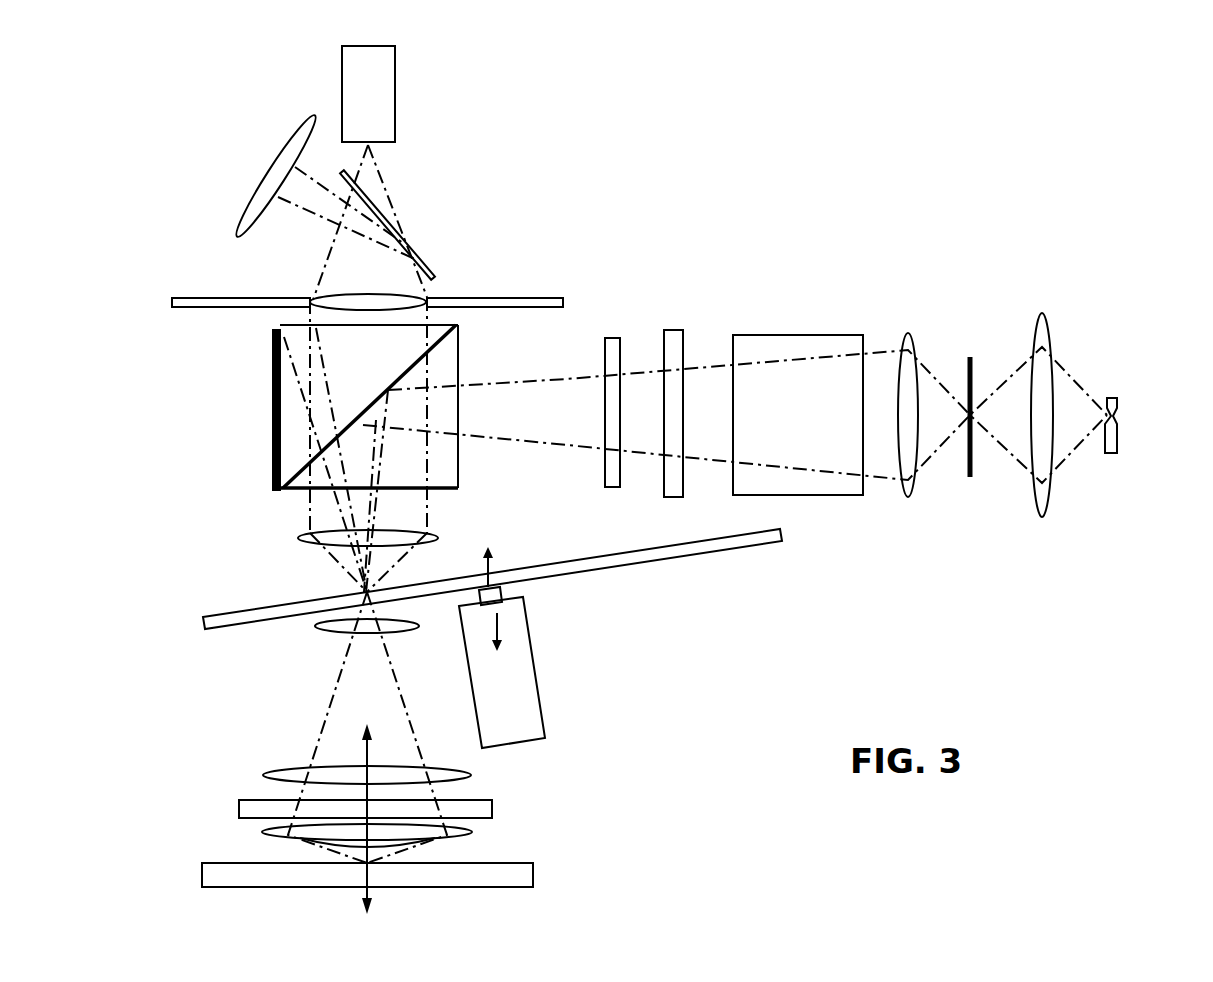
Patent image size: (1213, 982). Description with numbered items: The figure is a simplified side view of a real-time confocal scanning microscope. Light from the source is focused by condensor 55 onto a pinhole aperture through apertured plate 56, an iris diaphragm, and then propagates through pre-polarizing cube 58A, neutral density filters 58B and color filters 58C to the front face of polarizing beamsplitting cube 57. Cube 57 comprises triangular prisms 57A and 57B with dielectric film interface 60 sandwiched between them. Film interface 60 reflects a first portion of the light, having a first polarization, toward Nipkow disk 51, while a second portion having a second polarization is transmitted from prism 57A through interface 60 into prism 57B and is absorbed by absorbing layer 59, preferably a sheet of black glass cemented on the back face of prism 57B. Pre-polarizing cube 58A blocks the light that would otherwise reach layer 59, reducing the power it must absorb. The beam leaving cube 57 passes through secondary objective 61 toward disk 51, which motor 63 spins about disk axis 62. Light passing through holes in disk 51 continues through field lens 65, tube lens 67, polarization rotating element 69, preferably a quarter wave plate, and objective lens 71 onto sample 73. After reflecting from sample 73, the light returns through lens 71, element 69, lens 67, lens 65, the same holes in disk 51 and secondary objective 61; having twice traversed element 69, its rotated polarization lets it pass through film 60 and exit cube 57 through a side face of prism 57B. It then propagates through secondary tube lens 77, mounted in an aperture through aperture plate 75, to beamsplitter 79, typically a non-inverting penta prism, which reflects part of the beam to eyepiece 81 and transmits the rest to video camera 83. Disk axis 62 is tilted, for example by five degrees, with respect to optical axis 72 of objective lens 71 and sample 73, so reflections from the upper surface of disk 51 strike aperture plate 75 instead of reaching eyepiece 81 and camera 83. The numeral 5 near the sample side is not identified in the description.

The object / sample 5 is at (1118, 443).
The Nipkow disk 51 is at (683, 557).
The condensor 55 is at (1045, 313).
The apertured plate 56 is at (965, 465).
The polarizing beamsplitting cube 57 is at (337, 430).
The triangular prism 57A is at (447, 462).
The triangular prism 57B is at (347, 343).
The pre-polarizing cube 58A is at (797, 335).
The neutral density filters 58B is at (677, 337).
The color filters 58C is at (610, 343).
The absorbing layer 59 is at (272, 424).
The dielectric film interface 60 is at (420, 362).
The secondary objective 61 is at (300, 538).
The disk axis 62 is at (493, 615).
The motor 63 is at (532, 680).
The field lens 65 is at (320, 628).
The tube lens 67 is at (265, 775).
The polarization rotating element 69 is at (240, 803).
The objective lens 71 is at (270, 830).
The optical axis 72 is at (360, 902).
The sample 73 is at (502, 887).
The aperture plate 75 is at (190, 297).
The secondary tube lens 77 is at (333, 297).
The beamsplitter 79 is at (372, 183).
The eyepiece 81 is at (250, 203).
The video camera 83 is at (395, 110).